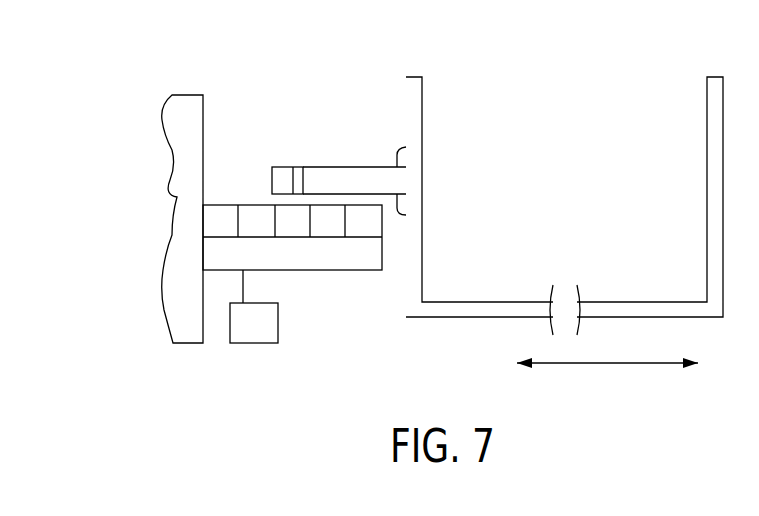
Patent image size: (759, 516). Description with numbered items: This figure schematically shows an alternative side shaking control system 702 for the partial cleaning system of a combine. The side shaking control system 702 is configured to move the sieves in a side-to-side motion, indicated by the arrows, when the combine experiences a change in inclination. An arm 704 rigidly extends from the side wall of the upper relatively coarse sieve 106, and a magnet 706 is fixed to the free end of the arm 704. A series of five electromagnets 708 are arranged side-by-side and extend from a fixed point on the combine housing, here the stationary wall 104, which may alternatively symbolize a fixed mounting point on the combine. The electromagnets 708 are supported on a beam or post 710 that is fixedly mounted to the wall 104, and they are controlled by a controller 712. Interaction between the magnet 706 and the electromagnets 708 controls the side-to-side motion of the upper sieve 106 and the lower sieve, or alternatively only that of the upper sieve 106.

The stationary wall 104 is at (177, 197).
The upper relatively coarse sieve 106 is at (549, 127).
The side shaking control system 702 is at (253, 66).
The arm 704 is at (350, 177).
The magnet 706 is at (283, 167).
The electromagnets 708 is at (335, 227).
The beam or post 710 is at (353, 255).
The controller 712 is at (260, 343).